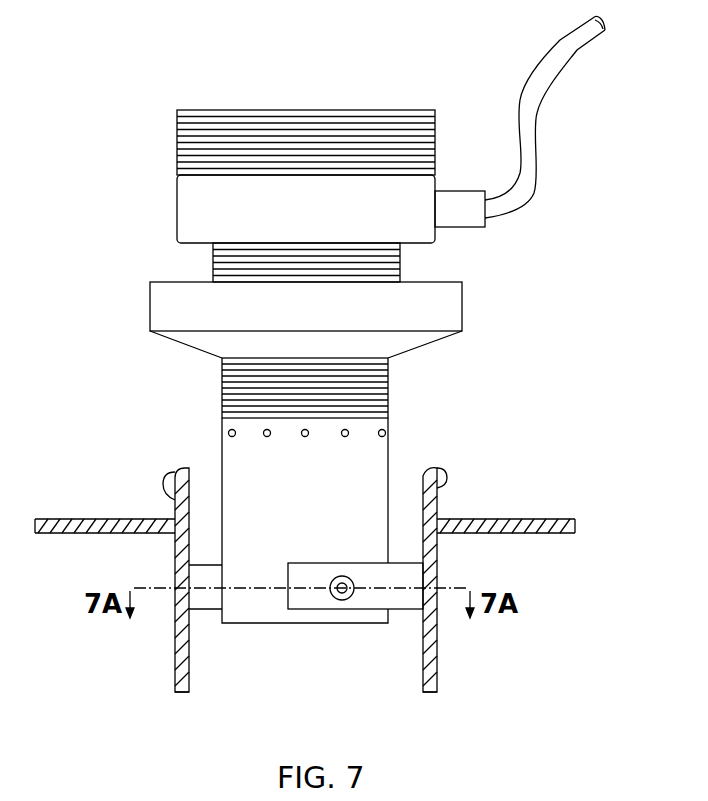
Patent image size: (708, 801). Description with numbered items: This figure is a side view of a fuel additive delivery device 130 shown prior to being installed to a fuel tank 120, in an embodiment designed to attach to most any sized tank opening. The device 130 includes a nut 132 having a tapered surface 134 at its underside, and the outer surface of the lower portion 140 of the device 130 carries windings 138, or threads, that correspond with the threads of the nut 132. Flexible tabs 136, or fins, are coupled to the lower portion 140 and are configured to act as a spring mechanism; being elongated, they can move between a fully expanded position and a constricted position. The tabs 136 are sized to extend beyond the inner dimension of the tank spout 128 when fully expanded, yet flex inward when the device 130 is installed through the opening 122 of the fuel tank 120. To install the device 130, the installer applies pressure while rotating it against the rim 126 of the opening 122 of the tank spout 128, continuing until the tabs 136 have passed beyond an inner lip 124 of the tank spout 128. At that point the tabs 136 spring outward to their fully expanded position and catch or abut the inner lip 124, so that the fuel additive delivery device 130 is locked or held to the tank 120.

The fuel tank 120 is at (102, 519).
The opening 122 is at (303, 577).
The inner lip 124 is at (183, 694).
The rim 126 is at (165, 474).
The tank spout 128 is at (175, 667).
The fuel additive delivery device 130 is at (118, 240).
The nut 132 is at (150, 303).
The tapered surface 134 is at (428, 342).
The flexible tabs 136 is at (207, 596).
The windings 138 is at (388, 400).
The lower portion 140 is at (222, 452).